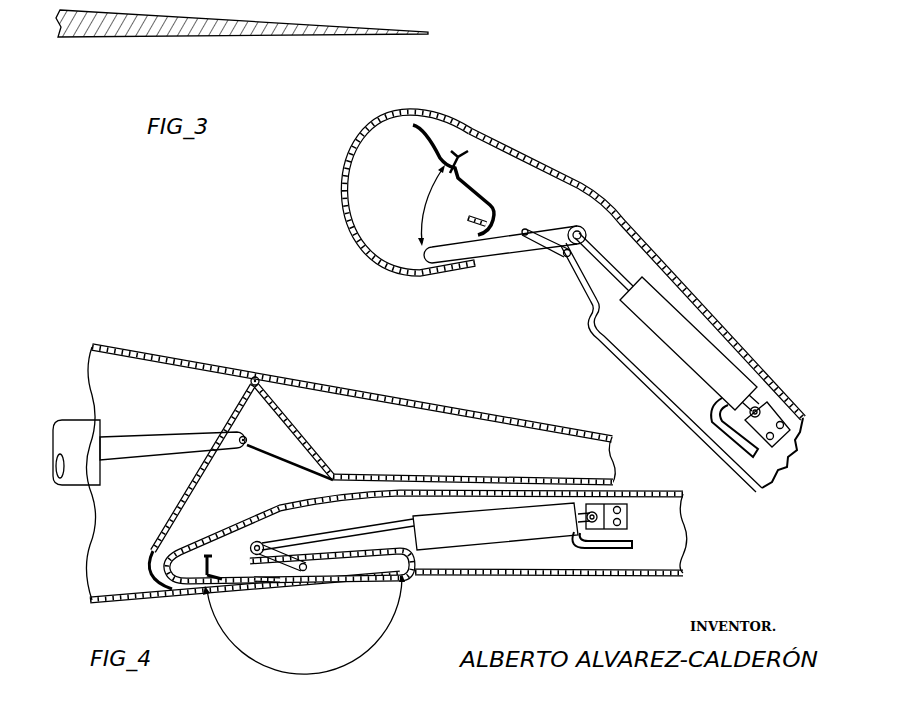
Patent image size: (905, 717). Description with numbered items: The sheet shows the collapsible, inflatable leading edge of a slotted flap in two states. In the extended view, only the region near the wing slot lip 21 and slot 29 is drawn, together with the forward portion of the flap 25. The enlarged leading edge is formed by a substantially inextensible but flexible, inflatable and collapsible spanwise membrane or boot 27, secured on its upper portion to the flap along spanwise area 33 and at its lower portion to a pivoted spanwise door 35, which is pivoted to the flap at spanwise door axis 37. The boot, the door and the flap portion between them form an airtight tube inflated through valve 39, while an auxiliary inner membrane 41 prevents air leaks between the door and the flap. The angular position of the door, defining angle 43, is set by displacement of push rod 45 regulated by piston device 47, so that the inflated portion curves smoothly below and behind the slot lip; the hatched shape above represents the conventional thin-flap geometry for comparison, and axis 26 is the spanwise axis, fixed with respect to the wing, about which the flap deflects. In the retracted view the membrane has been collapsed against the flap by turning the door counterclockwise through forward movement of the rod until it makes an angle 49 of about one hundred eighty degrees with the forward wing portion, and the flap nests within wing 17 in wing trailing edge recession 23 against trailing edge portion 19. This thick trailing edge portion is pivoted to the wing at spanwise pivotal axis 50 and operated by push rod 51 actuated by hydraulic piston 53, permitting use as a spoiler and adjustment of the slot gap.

In FIG. 4, the wing 17 is at (125, 348).
In FIG. 4, the wing trailing edge portion 19 is at (468, 410).
In FIG. 3, the wing slot lip 21 is at (428, 33).
In FIG. 4, the wing trailing edge recession 23 is at (332, 492).
In FIG. 3, the flap 25 is at (724, 320).
In FIG. 4, the flap 25 is at (478, 575).
In FIG. 3, the flap pivot axis 26 is at (570, 257).
In FIG. 3, the collapsible leading edge membrane or boot 27 is at (347, 210).
In FIG. 4, the collapsible leading edge membrane or boot 27 is at (353, 581).
In FIG. 3, the slot 29 is at (470, 63).
In FIG. 3, the spanwise area 33 is at (494, 140).
In FIG. 3, the pivoted spanwise door 35 is at (487, 256).
In FIG. 4, the pivoted spanwise door 35 is at (369, 578).
In FIG. 3, the spanwise door axis 37 is at (529, 250).
In FIG. 4, the spanwise door axis 37 is at (303, 572).
In FIG. 3, the valve 39 is at (458, 172).
In FIG. 4, the valve 39 is at (181, 590).
In FIG. 3, the auxiliary inner membrane 41 is at (480, 210).
In FIG. 4, the auxiliary inner membrane 41 is at (268, 580).
In FIG. 3, the door angle 43 is at (425, 202).
In FIG. 3, the push rod 45 is at (610, 262).
In FIG. 4, the push rod 45 is at (411, 572).
In FIG. 3, the piston device 47 is at (667, 297).
In FIG. 4, the door angle in retracted position 49 is at (345, 657).
In FIG. 4, the spanwise pivotal axis 50 is at (264, 354).
In FIG. 4, the push rod 51 is at (227, 447).
In FIG. 4, the hydraulic piston 53 is at (75, 433).